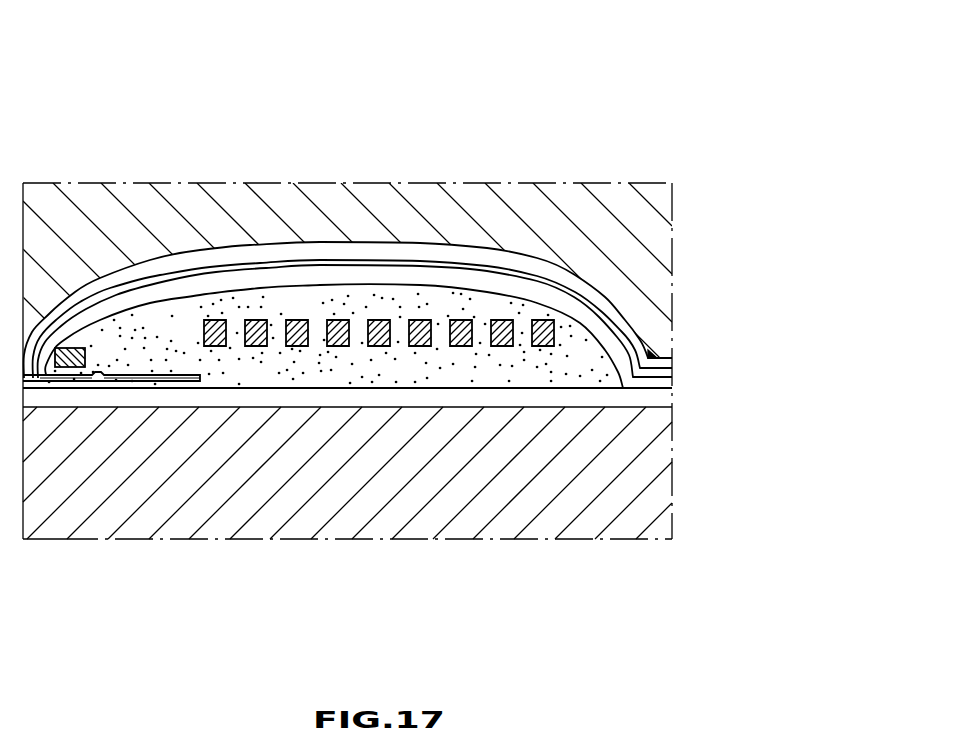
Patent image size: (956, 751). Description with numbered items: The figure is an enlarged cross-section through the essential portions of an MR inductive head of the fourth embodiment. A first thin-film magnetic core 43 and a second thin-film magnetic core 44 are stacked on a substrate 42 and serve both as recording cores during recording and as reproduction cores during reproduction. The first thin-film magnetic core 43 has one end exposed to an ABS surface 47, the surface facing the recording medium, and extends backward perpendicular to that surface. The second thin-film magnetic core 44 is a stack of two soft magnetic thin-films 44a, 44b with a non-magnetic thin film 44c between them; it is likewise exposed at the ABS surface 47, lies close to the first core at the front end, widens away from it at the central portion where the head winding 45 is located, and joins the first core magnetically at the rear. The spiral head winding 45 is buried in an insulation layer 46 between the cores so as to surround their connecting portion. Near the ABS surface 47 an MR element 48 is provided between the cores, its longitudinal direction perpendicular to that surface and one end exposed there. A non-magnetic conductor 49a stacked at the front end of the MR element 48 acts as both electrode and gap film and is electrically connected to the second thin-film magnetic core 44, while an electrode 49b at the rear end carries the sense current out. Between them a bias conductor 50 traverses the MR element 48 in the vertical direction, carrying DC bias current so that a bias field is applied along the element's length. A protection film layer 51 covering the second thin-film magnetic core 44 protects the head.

The substrate 42 is at (662, 455).
The first thin-film magnetic core 43 is at (592, 402).
The second thin-film magnetic core 44 is at (418, 217).
The soft magnetic thin-film 44a is at (232, 250).
The soft magnetic thin-film 44b is at (266, 280).
The non-magnetic thin film 44c is at (250, 260).
The head winding 45 is at (378, 346).
The insulation layer 46 is at (200, 297).
The ABS surface 47 is at (24, 532).
The MR element 48 is at (72, 381).
The non-magnetic conductor 49a is at (30, 381).
The electrode 49b is at (187, 380).
The bias conductor 50 is at (72, 348).
The protection film layer 51 is at (661, 246).